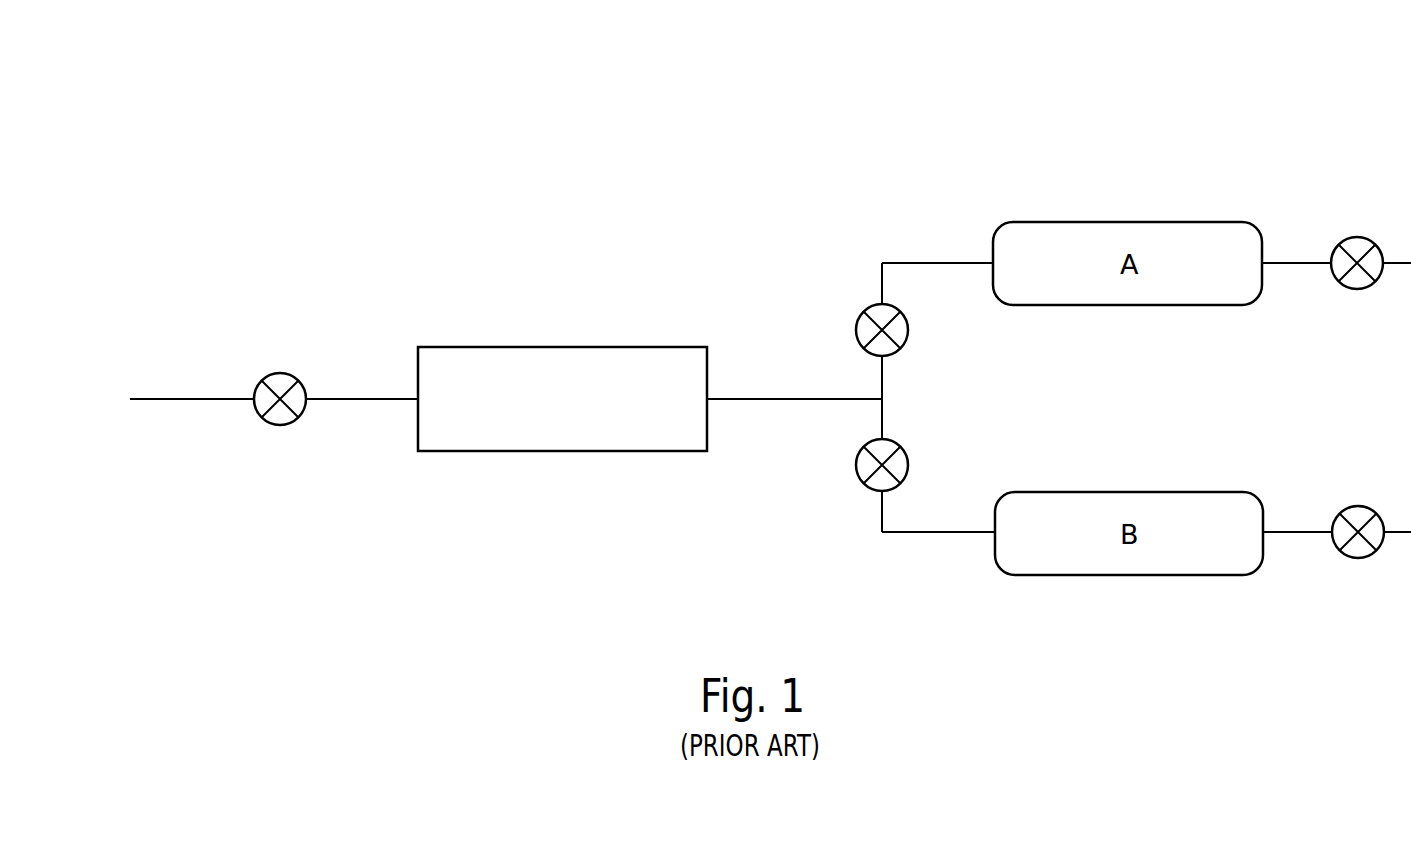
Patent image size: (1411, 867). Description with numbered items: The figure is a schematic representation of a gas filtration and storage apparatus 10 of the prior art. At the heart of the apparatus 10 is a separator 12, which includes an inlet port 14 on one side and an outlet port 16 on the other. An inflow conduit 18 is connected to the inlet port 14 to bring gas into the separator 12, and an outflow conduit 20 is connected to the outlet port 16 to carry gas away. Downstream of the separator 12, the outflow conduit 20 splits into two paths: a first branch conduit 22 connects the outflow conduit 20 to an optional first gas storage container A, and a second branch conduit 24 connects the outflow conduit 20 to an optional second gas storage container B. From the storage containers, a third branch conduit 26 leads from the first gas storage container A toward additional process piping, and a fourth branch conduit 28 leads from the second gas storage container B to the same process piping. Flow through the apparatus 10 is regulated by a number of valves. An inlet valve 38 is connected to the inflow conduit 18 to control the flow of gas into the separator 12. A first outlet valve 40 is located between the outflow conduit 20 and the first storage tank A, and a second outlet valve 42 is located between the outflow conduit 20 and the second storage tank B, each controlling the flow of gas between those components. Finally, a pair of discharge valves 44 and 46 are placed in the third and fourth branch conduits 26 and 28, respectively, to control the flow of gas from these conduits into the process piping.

The gas filtration and storage apparatus 10 is at (410, 125).
The separator 12 is at (580, 414).
The inlet port 14 is at (418, 401).
The outlet port 16 is at (708, 401).
The inflow conduit 18 is at (192, 399).
The outflow conduit 20 is at (801, 399).
The first branch conduit 22 is at (931, 263).
The second branch conduit 24 is at (935, 534).
The third branch conduit 26 is at (1293, 263).
The fourth branch conduit 28 is at (1295, 534).
The inlet valve 38 is at (271, 426).
The first outlet valve 40 is at (906, 322).
The second outlet valve 42 is at (906, 457).
The discharge valve 44 is at (1361, 237).
The discharge valve 46 is at (1364, 506).